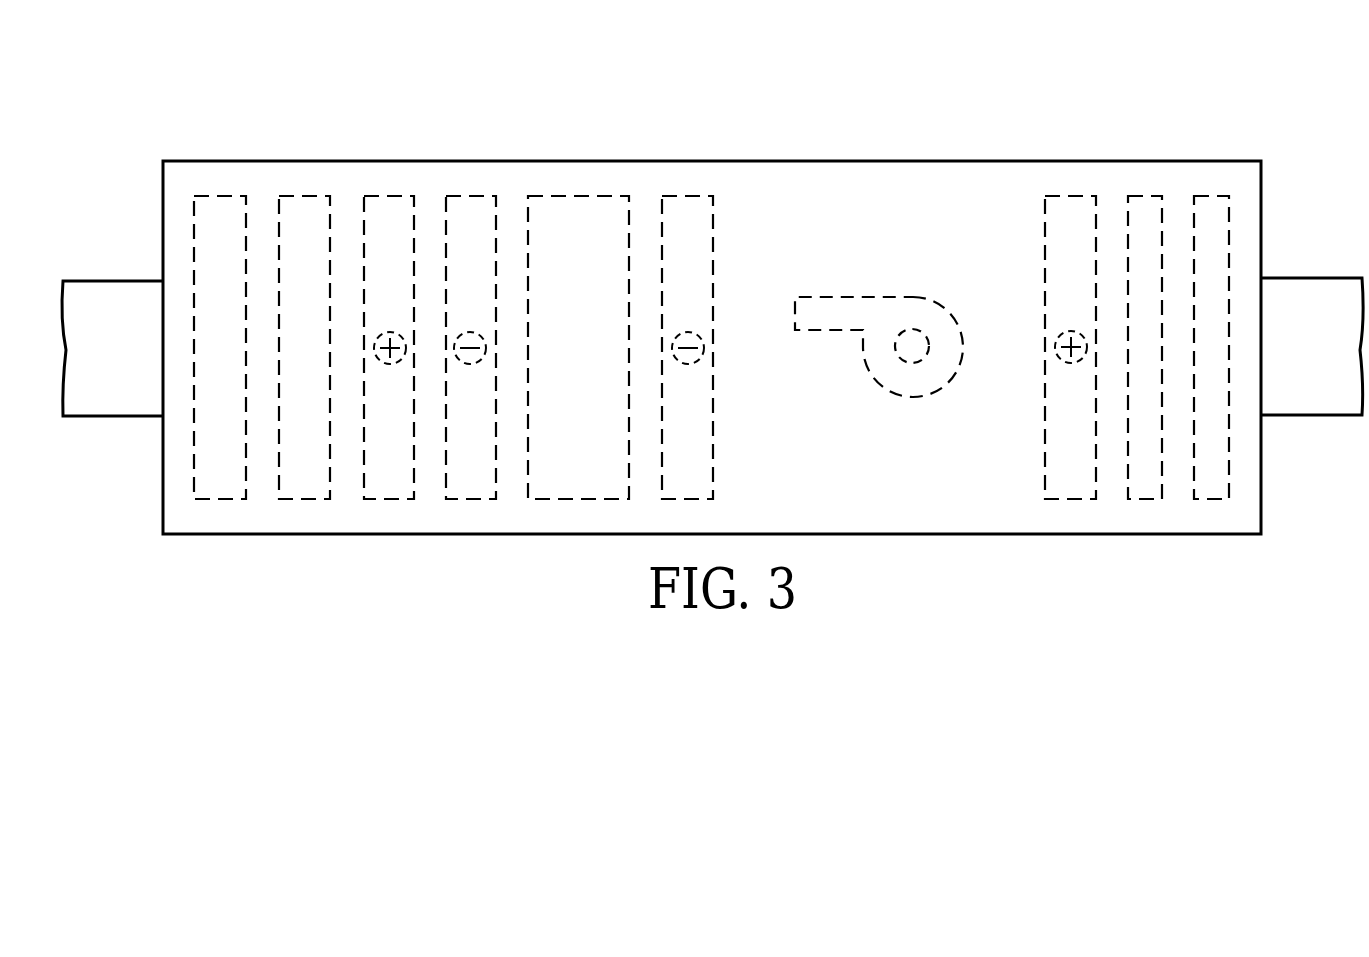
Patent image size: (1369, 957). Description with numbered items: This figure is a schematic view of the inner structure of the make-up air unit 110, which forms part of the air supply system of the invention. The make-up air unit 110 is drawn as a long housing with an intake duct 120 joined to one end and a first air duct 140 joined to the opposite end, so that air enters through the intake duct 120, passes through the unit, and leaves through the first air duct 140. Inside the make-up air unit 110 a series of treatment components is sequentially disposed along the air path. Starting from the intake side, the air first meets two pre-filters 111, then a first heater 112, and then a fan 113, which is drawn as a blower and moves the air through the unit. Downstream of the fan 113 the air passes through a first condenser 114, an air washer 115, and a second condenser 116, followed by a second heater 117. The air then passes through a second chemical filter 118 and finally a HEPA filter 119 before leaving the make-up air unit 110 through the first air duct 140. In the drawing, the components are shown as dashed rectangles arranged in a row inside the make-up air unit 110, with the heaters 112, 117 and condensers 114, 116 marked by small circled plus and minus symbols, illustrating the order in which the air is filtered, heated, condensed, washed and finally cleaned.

The make-up air unit 110 is at (792, 158).
The pre-filter 111 is at (1143, 196).
The first heater 112 is at (1070, 196).
The fan 113 is at (876, 297).
The first condenser 114 is at (687, 196).
The air washer 115 is at (577, 196).
The second condenser 116 is at (471, 196).
The second heater 117 is at (387, 196).
The second chemical filter 118 is at (303, 196).
The HEPA filter 119 is at (219, 196).
The intake duct 120 is at (1310, 292).
The first air duct 140 is at (111, 294).